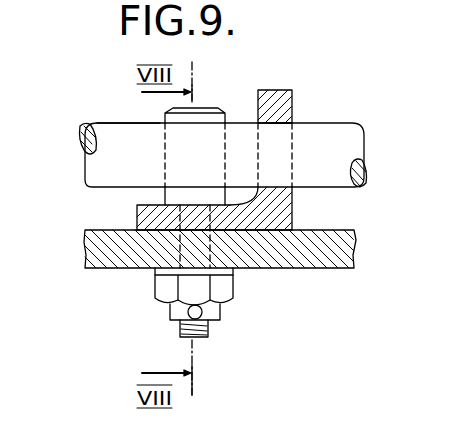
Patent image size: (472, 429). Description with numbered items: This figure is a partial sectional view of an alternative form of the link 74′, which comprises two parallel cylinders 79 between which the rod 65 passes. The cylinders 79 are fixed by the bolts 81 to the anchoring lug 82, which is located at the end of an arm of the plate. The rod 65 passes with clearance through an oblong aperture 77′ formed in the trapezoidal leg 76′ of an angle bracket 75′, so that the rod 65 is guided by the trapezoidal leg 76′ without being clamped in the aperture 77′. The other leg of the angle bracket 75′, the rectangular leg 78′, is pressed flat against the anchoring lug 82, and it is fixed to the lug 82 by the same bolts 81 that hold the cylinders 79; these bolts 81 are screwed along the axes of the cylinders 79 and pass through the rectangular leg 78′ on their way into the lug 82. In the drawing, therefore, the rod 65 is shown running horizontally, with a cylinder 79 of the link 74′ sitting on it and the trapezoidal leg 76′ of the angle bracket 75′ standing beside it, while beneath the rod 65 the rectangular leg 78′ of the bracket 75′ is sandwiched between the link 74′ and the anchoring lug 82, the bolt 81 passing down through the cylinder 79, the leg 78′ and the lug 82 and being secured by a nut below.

The rod 65 is at (336, 152).
The link 74′ is at (123, 116).
The angle bracket 75′ is at (293, 216).
The trapezoidal leg 76′ is at (273, 102).
The oblong aperture 77′ is at (282, 121).
The rectangular leg 78′ is at (157, 220).
The parallel cylinders 79 is at (207, 117).
The bolts 81 is at (165, 287).
The anchoring lug 82 is at (291, 248).